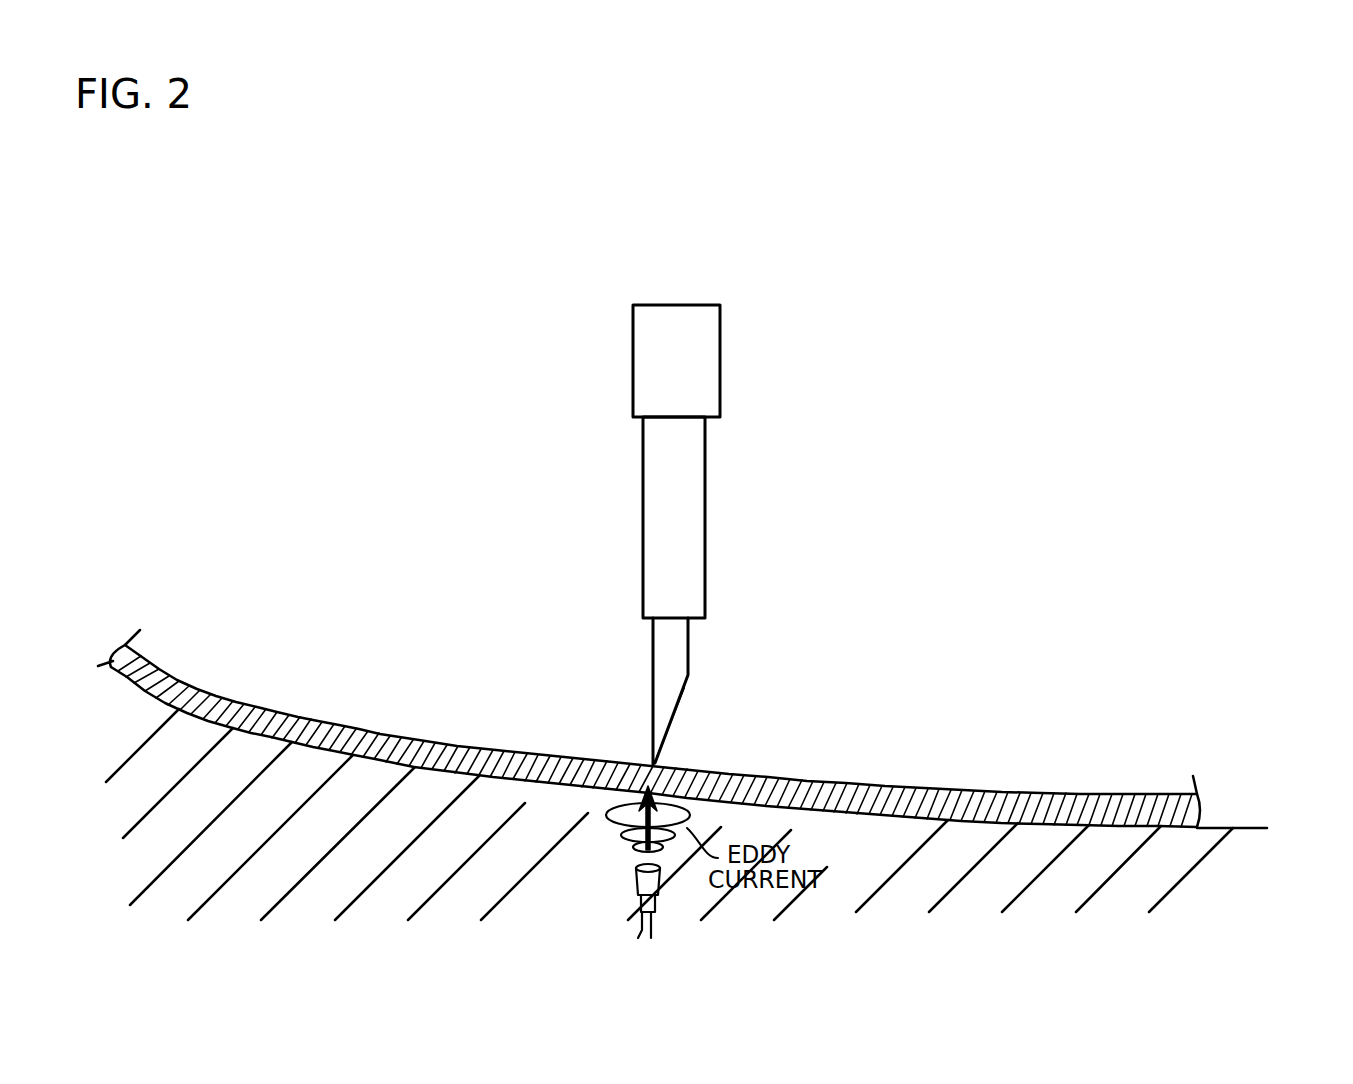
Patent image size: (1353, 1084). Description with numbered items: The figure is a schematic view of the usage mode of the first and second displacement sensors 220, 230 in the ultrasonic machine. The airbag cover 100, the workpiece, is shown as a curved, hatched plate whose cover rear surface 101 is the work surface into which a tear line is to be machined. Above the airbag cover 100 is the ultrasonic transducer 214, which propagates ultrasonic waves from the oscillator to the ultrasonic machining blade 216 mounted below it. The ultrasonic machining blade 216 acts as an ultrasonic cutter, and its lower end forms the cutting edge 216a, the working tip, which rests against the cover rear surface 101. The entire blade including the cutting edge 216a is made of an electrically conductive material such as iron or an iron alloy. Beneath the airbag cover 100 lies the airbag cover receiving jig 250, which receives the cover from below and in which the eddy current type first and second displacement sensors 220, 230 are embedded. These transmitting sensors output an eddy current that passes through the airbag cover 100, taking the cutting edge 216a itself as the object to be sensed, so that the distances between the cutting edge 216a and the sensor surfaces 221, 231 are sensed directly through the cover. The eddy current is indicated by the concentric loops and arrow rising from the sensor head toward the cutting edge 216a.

The airbag cover 100 is at (649, 706).
The cover rear surface 101 is at (345, 726).
The ultrasonic transducer 214 is at (669, 535).
The ultrasonic machining blade 216 is at (669, 692).
The cutting edge 216a is at (655, 766).
The first displacement sensor 220 is at (642, 884).
The second displacement sensor 230 is at (642, 884).
The sensor surface 221 is at (548, 856).
The sensor surface 231 is at (633, 868).
The airbag cover receiving jig 250 is at (1230, 811).